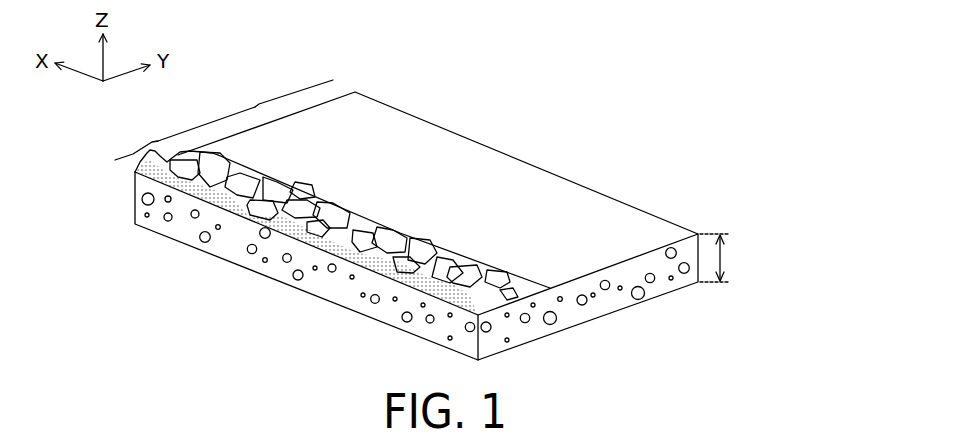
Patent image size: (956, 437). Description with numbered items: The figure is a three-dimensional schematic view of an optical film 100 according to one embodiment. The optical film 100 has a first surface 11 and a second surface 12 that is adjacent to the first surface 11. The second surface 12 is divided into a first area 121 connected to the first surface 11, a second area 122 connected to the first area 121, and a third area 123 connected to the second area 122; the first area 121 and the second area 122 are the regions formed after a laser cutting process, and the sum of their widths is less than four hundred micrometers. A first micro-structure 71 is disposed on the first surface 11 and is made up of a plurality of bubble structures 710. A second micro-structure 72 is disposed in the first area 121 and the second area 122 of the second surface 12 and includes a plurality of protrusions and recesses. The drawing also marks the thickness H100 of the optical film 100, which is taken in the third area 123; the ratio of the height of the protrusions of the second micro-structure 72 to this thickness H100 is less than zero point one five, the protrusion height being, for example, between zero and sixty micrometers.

The optical film 100 is at (868, 29).
The first surface 11 is at (388, 308).
The second surface 12 is at (460, 195).
The first area 121 is at (124, 144).
The second area 122 is at (193, 124).
The third area 123 is at (283, 92).
The first micro-structure 71 is at (253, 334).
The bubble structures 710 is at (197, 235).
The second micro-structure 72 is at (350, 243).
The thickness of the optical film H100 is at (741, 258).